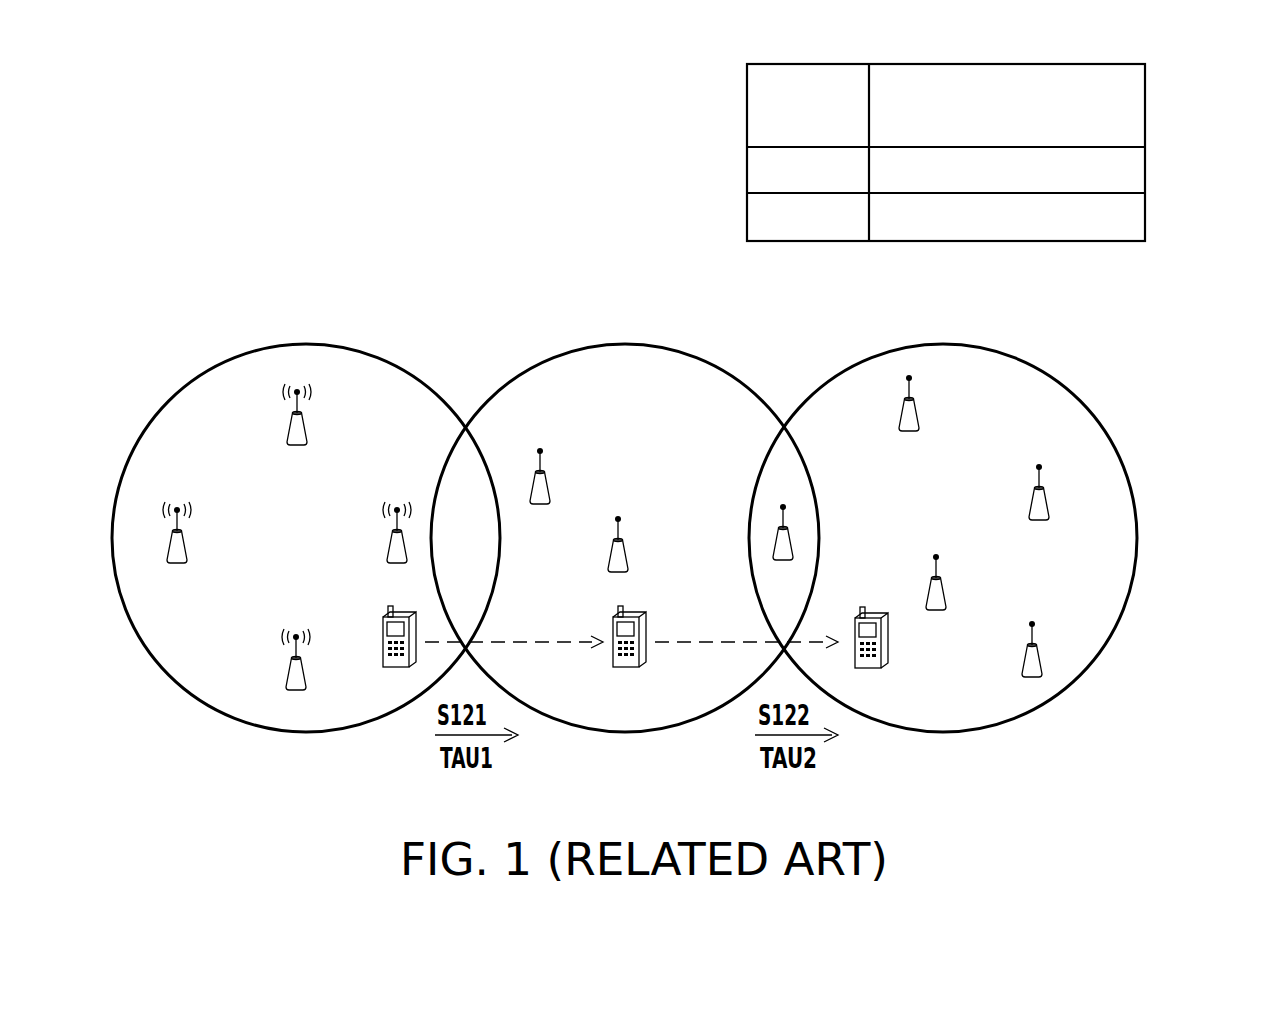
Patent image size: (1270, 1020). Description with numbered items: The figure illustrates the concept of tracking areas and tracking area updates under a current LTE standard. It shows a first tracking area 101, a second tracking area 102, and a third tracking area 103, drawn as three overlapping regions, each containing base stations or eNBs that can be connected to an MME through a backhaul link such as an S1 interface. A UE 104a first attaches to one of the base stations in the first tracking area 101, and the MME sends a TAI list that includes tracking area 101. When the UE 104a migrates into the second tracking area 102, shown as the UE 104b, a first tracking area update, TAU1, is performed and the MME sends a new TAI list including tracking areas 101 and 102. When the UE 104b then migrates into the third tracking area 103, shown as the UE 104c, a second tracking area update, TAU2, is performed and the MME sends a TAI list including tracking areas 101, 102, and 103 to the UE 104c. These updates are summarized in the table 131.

The first tracking area 101 is at (306, 344).
The second tracking area 102 is at (625, 344).
The third tracking area 103 is at (943, 344).
The UE 104a is at (383, 640).
The UE 104b is at (637, 612).
The UE 104c is at (875, 612).
The table 131 is at (1145, 118).